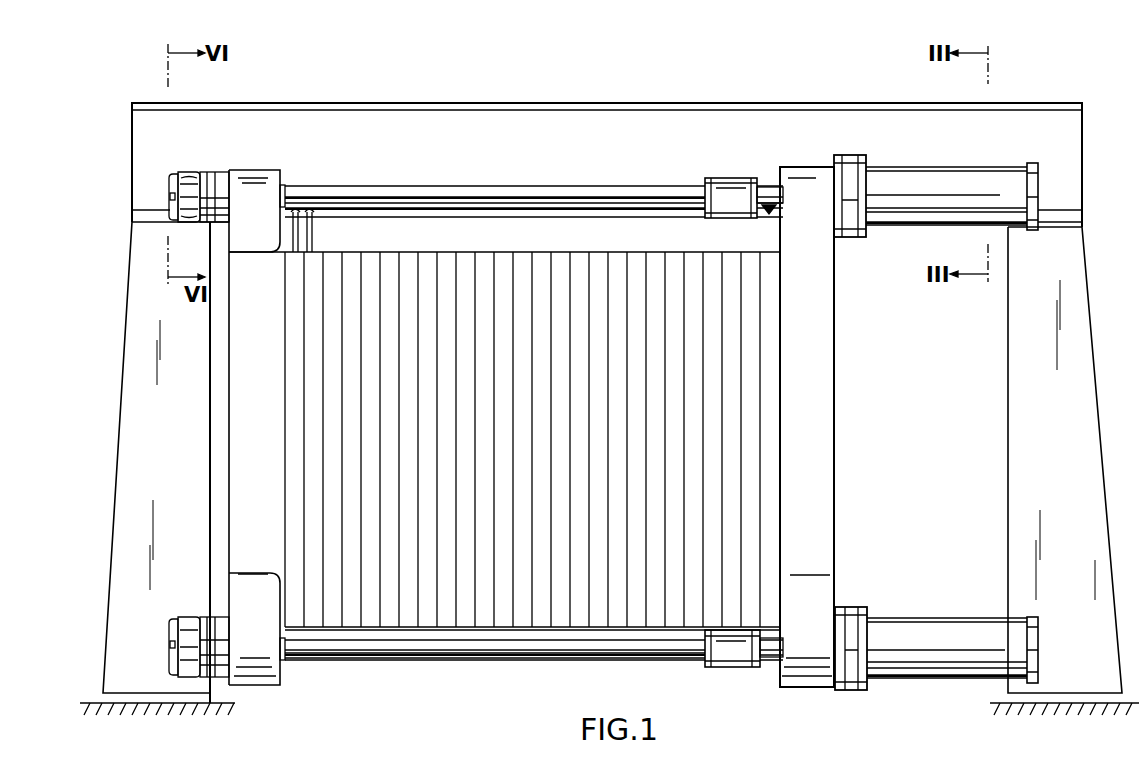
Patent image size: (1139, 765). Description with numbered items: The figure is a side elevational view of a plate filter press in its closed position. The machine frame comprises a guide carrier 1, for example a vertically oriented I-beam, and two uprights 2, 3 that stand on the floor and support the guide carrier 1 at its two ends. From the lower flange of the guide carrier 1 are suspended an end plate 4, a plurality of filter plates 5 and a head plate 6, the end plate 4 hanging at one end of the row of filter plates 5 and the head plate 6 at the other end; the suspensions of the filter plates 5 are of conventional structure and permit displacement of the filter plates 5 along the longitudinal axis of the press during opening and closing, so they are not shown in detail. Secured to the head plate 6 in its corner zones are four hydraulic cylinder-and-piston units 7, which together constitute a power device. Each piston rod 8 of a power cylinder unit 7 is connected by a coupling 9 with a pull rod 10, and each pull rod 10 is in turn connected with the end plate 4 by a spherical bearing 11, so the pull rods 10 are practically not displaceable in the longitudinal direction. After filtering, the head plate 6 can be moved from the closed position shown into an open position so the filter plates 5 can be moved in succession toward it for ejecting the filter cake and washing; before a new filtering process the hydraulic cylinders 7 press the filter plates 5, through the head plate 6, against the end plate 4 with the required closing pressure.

The guide carrier 1 is at (583, 143).
The upright 2 is at (137, 258).
The upright 3 is at (1009, 343).
The end plate 4 is at (240, 364).
The filter plates 5 is at (338, 620).
The head plate 6 is at (834, 392).
The hydraulic cylinder-and-piston unit 7 is at (904, 216).
The piston rod 8 is at (771, 188).
The coupling 9 is at (731, 190).
The pull rod 10 is at (524, 200).
The spherical bearing 11 is at (212, 164).